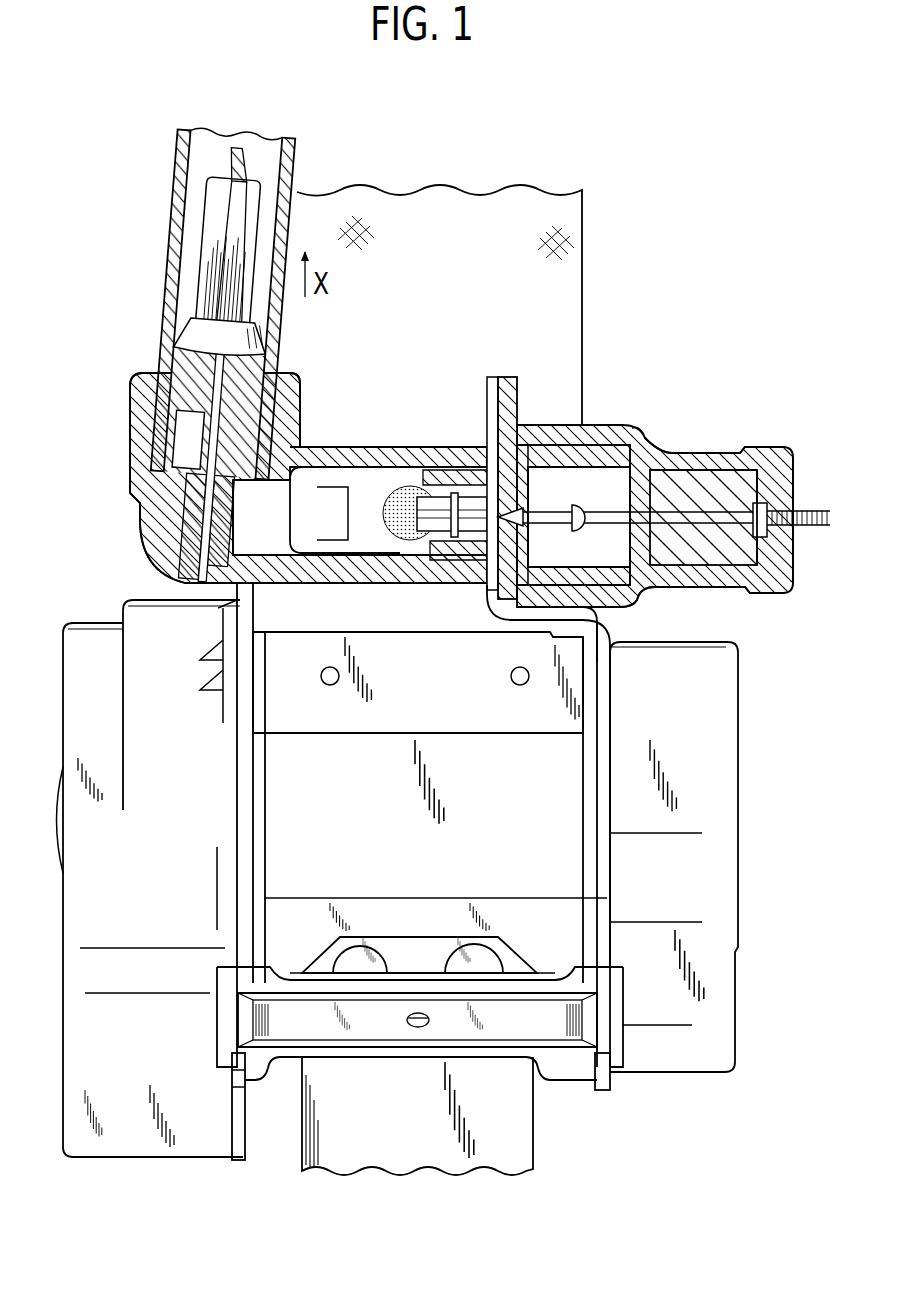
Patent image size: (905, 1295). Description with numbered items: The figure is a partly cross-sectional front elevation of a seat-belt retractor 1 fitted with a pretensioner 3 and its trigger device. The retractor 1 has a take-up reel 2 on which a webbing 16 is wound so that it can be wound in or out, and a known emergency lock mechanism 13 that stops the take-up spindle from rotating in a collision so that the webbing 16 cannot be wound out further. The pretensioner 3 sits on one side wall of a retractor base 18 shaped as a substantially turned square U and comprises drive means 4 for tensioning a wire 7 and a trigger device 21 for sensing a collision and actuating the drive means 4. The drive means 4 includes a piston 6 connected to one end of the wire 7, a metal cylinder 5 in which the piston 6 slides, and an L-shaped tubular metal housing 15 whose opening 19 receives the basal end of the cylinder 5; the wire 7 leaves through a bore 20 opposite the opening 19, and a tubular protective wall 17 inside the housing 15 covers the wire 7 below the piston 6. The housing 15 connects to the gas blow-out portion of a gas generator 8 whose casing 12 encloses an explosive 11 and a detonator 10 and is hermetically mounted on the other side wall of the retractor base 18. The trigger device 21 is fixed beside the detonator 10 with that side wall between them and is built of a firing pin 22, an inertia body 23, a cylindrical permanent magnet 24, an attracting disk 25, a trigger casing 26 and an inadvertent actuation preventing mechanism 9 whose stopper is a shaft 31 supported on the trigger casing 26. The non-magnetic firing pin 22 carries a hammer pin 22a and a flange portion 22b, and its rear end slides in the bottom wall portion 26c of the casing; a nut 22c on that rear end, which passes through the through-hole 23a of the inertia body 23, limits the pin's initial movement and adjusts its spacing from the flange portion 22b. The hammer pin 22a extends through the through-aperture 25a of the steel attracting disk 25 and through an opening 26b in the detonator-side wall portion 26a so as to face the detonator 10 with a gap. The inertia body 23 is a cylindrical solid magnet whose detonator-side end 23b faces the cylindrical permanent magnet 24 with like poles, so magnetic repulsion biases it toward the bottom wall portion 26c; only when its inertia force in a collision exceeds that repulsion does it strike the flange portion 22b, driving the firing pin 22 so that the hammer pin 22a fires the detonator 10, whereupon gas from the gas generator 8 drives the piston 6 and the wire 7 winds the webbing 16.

The retractor 1 is at (130, 522).
The take-up reel 2 is at (256, 933).
The pretensioner 3 is at (155, 817).
The drive means 4 is at (324, 381).
The cylinder 5 is at (178, 164).
The piston 6 is at (225, 219).
The wire 7 is at (200, 548).
The gas generator 8 is at (362, 496).
The inadvertent actuation preventing mechanism 9 is at (693, 365).
The detonator 10 is at (443, 502).
The explosive 11 is at (396, 522).
The casing 12 is at (390, 476).
The emergency lock mechanism 13 is at (688, 797).
The housing 15 is at (143, 397).
The webbing 16 is at (413, 207).
The protective wall 17 is at (145, 462).
The retractor base 18 is at (243, 812).
The opening 19 is at (163, 385).
The bore 20 is at (235, 518).
The trigger device 21 is at (707, 443).
The firing pin 22 is at (605, 500).
The hammer pin 22a is at (579, 517).
The flange portion 22b is at (603, 628).
The nut 22c is at (768, 505).
The inertia body 23 is at (762, 489).
The through-hole 23a is at (710, 513).
The detonator-side end 23b is at (637, 552).
The cylindrical permanent magnet 24 is at (562, 443).
The attracting disk 25 is at (522, 398).
The through-aperture 25a is at (664, 538).
The trigger casing 26 is at (745, 594).
The detonator-side wall portion 26a is at (490, 590).
The opening 26b is at (446, 494).
The bottom wall portion 26c is at (778, 563).
The shaft 31 is at (664, 440).